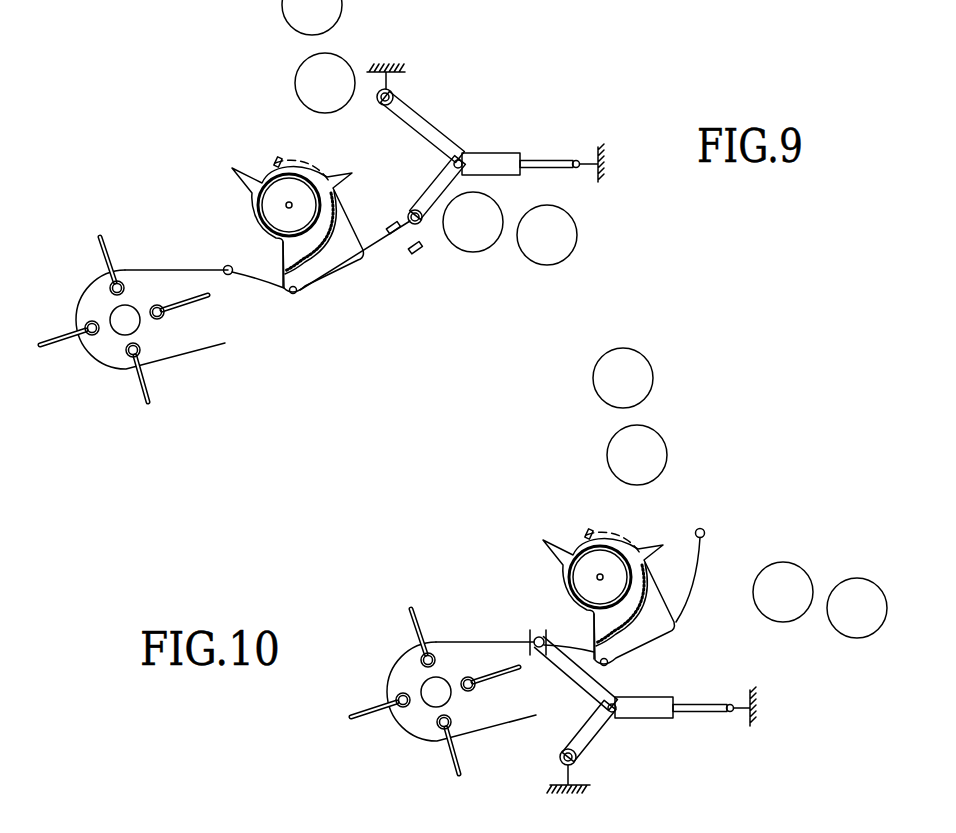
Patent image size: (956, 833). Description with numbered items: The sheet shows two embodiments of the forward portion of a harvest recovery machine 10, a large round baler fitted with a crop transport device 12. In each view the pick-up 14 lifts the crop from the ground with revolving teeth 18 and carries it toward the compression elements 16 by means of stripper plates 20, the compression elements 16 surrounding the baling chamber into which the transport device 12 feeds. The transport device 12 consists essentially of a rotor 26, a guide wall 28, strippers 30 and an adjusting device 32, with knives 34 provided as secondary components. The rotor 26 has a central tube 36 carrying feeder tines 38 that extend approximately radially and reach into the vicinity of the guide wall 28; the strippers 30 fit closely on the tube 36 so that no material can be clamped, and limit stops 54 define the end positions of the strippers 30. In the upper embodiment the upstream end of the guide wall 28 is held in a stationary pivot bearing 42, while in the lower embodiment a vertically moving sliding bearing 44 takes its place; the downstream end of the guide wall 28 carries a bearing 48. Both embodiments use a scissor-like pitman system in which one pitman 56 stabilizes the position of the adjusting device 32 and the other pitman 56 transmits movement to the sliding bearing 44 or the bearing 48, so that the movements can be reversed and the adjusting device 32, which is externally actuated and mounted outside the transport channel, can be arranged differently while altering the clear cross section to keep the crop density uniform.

In FIG. 9, the harvest recovery machine 10 is at (178, 83).
In FIG. 10, the harvest recovery machine 10 is at (368, 552).
In FIG. 9, the crop transport device 12 is at (215, 203).
In FIG. 10, the crop transport device 12 is at (500, 567).
In FIG. 9, the pick-up 14 is at (178, 372).
In FIG. 10, the pick-up 14 is at (480, 752).
In FIG. 9, the compression elements 16 is at (482, 243).
In FIG. 10, the compression elements 16 is at (645, 383).
In FIG. 9, the teeth 18 is at (142, 393).
In FIG. 10, the teeth 18 is at (367, 703).
In FIG. 9, the stripper plates 20 is at (170, 268).
In FIG. 10, the stripper plates 20 is at (480, 641).
In FIG. 9, the rotor 26 is at (226, 190).
In FIG. 10, the rotor 26 is at (535, 552).
In FIG. 9, the guide wall 28 is at (257, 290).
In FIG. 10, the guide wall 28 is at (569, 648).
In FIG. 9, the strippers 30 is at (293, 255).
In FIG. 10, the strippers 30 is at (604, 626).
In FIG. 9, the adjusting device 32 is at (488, 152).
In FIG. 10, the adjusting device 32 is at (635, 720).
In FIG. 9, the knives 34 is at (348, 260).
In FIG. 9, the tube 36 is at (279, 158).
In FIG. 10, the tube 36 is at (589, 531).
In FIG. 9, the feeder tines 38 is at (240, 170).
In FIG. 10, the feeder tines 38 is at (543, 540).
In FIG. 9, the stationary pivot bearing 42 is at (226, 265).
In FIG. 10, the sliding bearing 44 is at (541, 628).
In FIG. 9, the bearing 48 is at (410, 208).
In FIG. 10, the bearing 48 is at (704, 527).
In FIG. 9, the limit stops 54 is at (282, 157).
In FIG. 10, the limit stops 54 is at (612, 527).
In FIG. 9, the pitmans 56 is at (428, 120).
In FIG. 10, the pitmans 56 is at (598, 738).